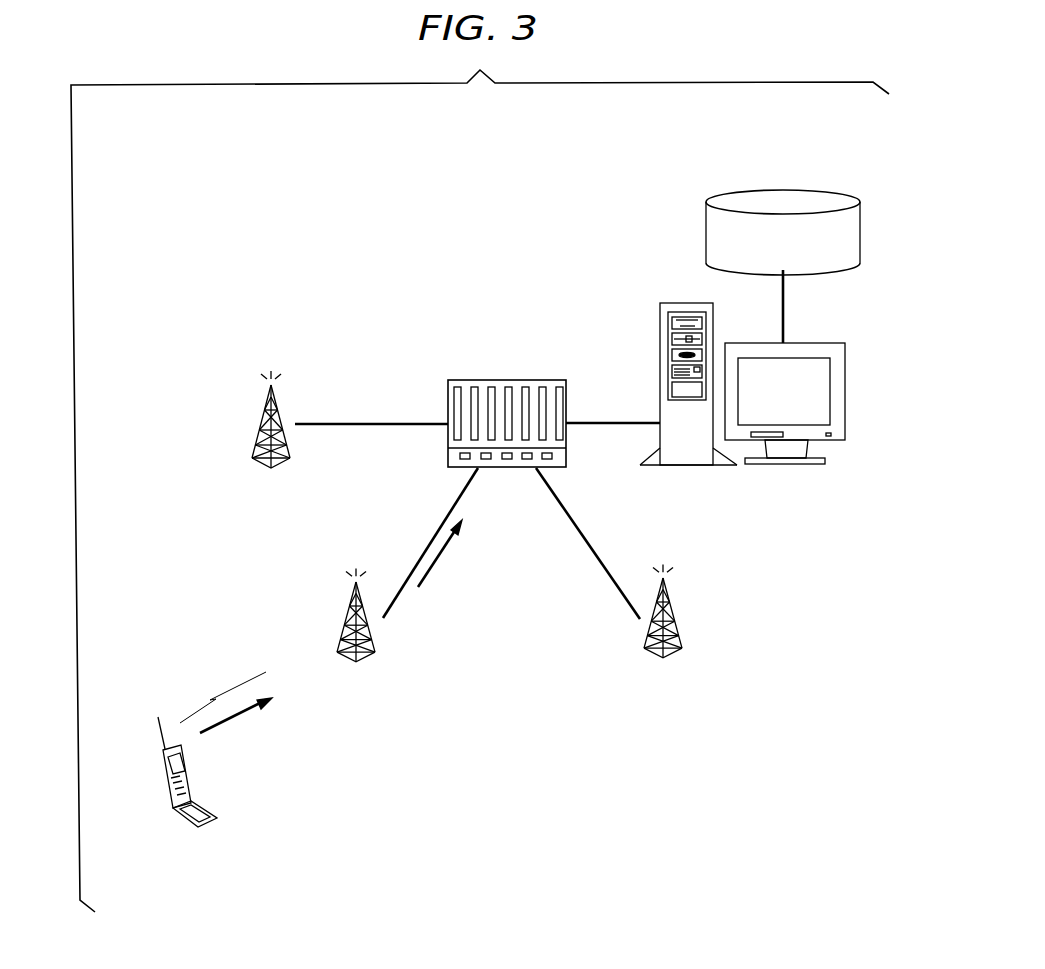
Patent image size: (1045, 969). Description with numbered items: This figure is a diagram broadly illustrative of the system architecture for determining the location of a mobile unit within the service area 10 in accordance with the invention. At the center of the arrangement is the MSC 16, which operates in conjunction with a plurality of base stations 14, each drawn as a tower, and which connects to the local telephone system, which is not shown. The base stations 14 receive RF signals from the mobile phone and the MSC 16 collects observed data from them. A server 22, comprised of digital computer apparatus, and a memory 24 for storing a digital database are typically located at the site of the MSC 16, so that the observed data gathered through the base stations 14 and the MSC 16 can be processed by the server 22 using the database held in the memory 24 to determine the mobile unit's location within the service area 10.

The service area 10 is at (516, 699).
The base station 14 is at (710, 610).
The MSC 16 is at (508, 392).
The server 22 is at (660, 335).
The memory 24 is at (778, 190).